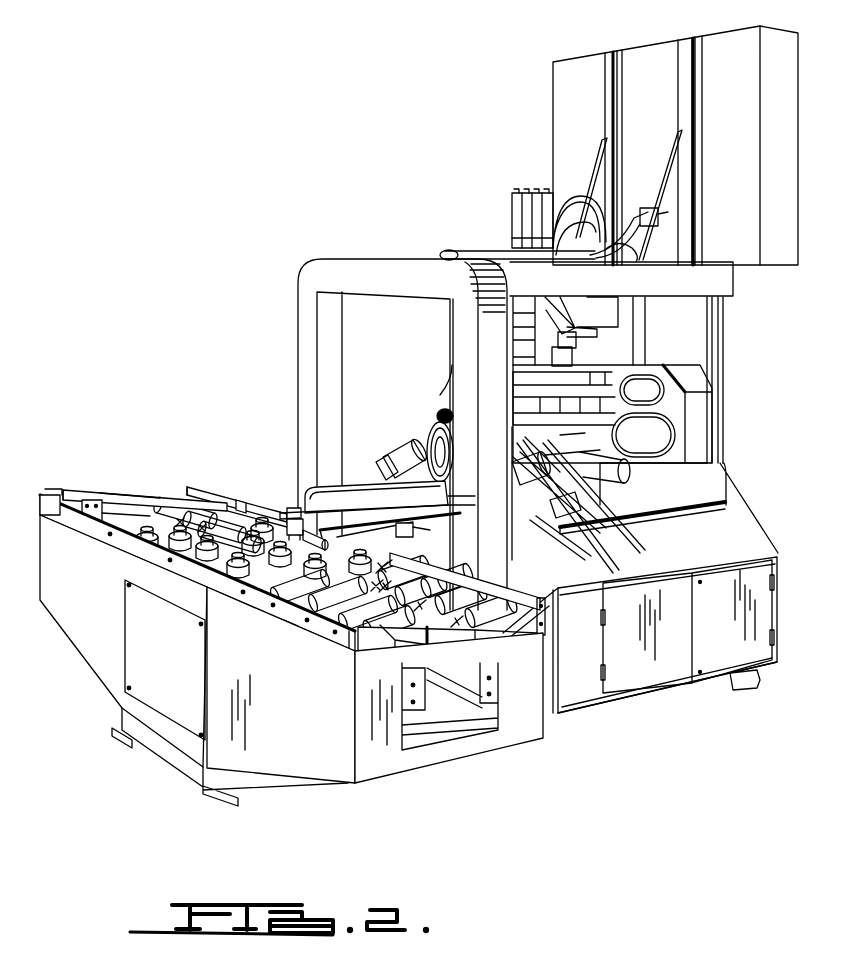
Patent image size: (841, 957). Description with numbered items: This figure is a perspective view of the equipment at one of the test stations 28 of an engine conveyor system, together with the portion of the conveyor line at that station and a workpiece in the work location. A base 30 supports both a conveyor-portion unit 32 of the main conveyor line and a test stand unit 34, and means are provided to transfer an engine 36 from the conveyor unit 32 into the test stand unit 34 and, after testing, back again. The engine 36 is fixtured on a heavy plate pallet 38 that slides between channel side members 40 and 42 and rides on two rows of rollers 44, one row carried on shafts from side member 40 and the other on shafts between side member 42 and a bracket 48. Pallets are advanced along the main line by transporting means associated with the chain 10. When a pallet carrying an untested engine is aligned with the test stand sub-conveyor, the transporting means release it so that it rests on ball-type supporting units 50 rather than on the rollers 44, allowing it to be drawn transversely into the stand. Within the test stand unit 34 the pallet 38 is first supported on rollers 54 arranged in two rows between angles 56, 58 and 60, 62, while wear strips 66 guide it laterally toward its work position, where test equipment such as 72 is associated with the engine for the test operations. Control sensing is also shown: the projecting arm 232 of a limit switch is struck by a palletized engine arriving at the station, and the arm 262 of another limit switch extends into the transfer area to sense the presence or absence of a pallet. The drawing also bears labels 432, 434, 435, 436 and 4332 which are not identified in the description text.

The chain 10 is at (455, 646).
The test station 28 is at (112, 327).
The base 30 is at (213, 783).
The conveyor-portion unit 32 is at (313, 762).
The test stand unit 34 is at (663, 683).
The engine 36 is at (433, 415).
The pallet 38 is at (413, 535).
The channel side member 40 is at (53, 500).
The channel side member 42 is at (202, 497).
The rollers 44 is at (178, 498).
The bracket 48 is at (241, 500).
The ball-type supporting unit 50 is at (150, 563).
The rollers 54 is at (312, 547).
The angle 56 is at (323, 545).
The angle 58 is at (400, 560).
The angle 60 is at (381, 568).
The angle 62 is at (377, 585).
The wear strips 66 is at (287, 512).
The test equipment 72 is at (628, 535).
The projecting arm 232 is at (160, 503).
The arm 262 is at (173, 562).
The guide 432 is at (78, 497).
The hose 434 is at (118, 577).
The cover 435 is at (330, 533).
The cover 436 is at (363, 532).
The mounting plate 4332 is at (290, 628).